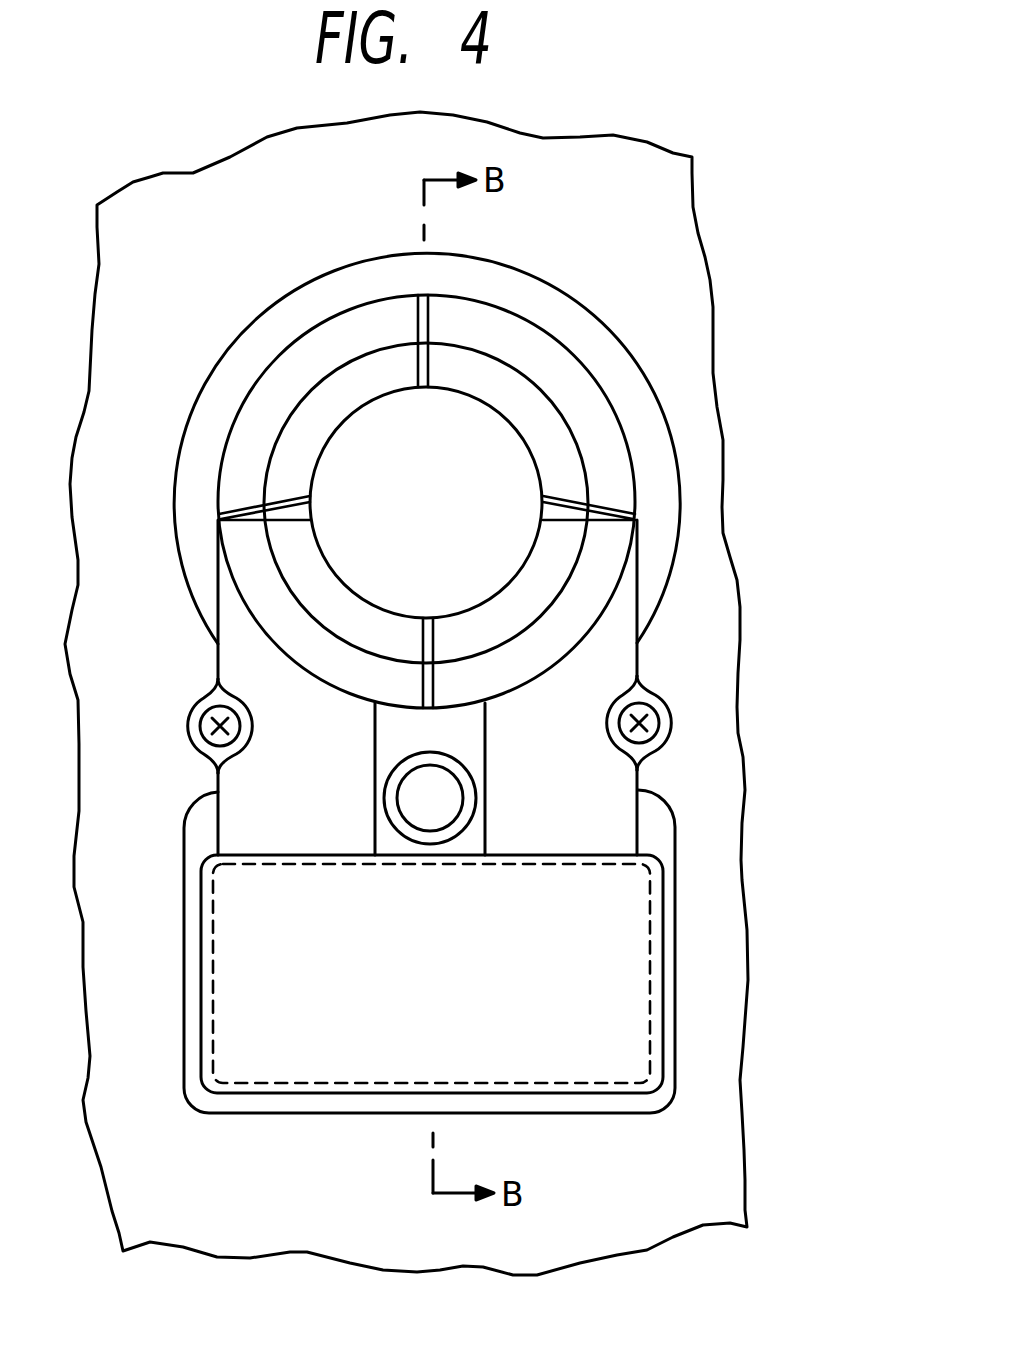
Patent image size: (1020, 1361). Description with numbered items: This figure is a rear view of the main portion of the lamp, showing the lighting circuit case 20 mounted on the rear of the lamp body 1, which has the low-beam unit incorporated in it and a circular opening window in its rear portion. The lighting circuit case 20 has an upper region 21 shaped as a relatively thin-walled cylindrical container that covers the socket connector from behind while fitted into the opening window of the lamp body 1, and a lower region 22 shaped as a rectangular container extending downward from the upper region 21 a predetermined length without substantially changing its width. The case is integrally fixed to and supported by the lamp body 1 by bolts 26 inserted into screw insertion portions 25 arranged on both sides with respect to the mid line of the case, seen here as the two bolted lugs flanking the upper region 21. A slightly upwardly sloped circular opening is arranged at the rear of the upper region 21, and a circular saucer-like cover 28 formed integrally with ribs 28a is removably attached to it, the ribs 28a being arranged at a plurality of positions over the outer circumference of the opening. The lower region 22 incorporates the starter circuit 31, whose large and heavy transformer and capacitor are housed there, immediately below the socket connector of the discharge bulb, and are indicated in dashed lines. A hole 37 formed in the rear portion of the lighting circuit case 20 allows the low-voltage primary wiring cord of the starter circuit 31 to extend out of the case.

The lamp body 1 is at (697, 408).
The lighting circuit case 20 is at (605, 776).
The upper region 21 is at (197, 468).
The lower region 22 is at (187, 983).
The screw insertion portions 25 is at (650, 688).
The bolts 26 is at (198, 720).
The cover 28 is at (488, 447).
The ribs 28a is at (430, 357).
The starter circuit 31 is at (620, 1025).
The hole 37 is at (417, 795).